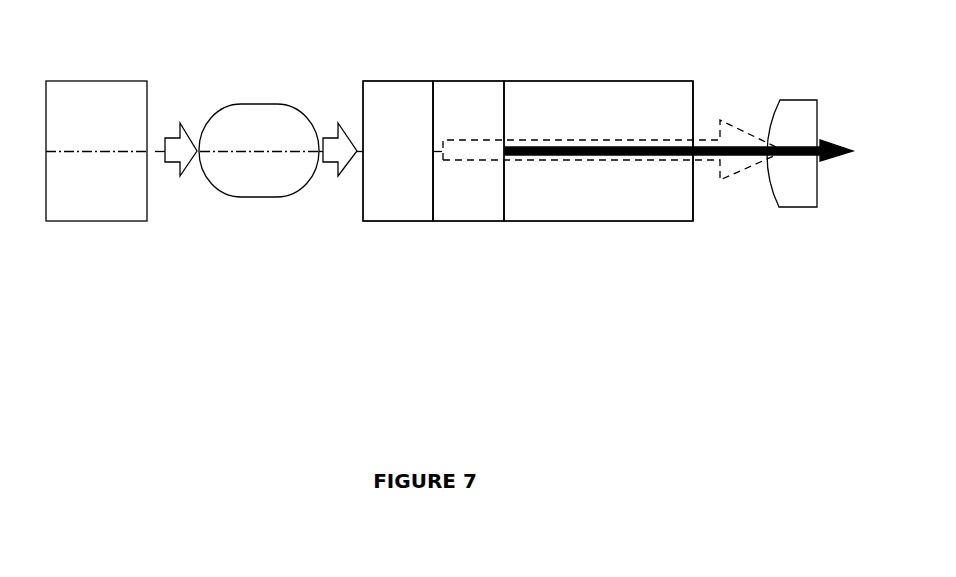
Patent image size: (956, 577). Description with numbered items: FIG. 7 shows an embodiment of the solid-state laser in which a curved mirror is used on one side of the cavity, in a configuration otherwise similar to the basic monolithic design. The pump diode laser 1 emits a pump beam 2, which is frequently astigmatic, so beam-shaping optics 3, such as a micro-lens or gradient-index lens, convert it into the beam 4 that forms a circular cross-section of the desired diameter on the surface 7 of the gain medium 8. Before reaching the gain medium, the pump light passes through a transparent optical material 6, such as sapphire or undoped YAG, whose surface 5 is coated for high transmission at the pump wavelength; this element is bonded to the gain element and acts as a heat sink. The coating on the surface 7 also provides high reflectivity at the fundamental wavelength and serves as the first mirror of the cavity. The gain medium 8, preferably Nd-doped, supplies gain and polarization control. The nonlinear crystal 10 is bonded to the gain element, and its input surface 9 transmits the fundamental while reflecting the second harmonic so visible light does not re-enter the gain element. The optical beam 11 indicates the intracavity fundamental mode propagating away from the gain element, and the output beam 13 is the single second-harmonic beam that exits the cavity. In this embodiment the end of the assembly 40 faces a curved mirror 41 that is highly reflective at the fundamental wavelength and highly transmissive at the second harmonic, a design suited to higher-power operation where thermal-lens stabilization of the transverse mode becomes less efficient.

The pump diode laser 1 is at (98, 96).
The pump beam 2 is at (184, 154).
The beam-shaping optics 3 is at (277, 132).
The beam 4 is at (342, 153).
The surface 5 is at (363, 96).
The transparent optical material 6 is at (395, 207).
The surface of gain medium 7 is at (433, 96).
The gain medium 8 is at (468, 207).
The input surface of the nonlinear crystal 9 is at (504, 96).
The nonlinear crystal 10 is at (626, 207).
The optical beam 11 is at (715, 168).
The beam 13 is at (843, 138).
The output facet of assembly 40 is at (697, 95).
The concave output lens 41 is at (783, 115).